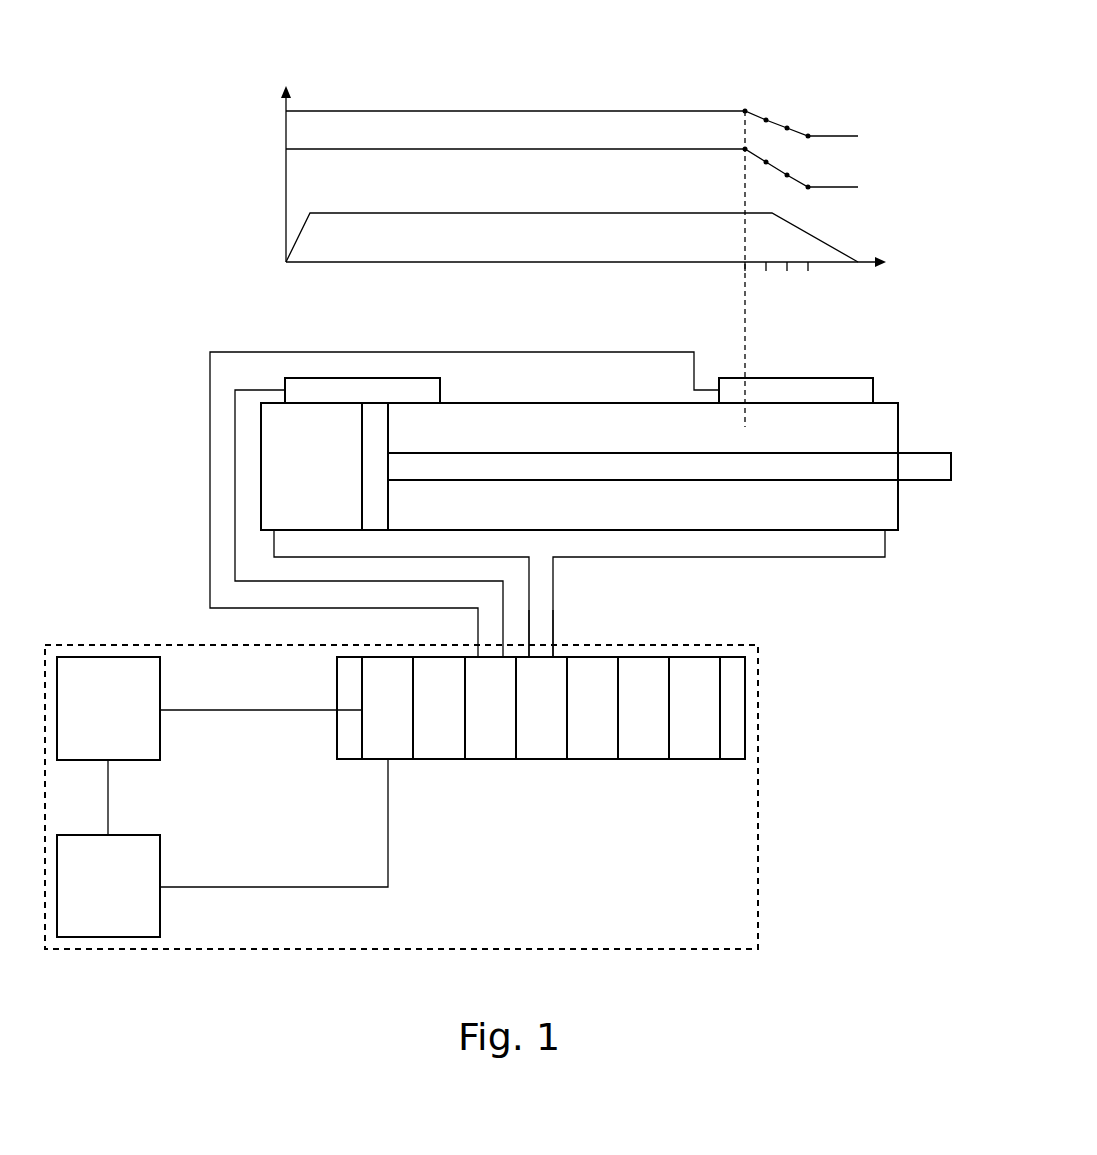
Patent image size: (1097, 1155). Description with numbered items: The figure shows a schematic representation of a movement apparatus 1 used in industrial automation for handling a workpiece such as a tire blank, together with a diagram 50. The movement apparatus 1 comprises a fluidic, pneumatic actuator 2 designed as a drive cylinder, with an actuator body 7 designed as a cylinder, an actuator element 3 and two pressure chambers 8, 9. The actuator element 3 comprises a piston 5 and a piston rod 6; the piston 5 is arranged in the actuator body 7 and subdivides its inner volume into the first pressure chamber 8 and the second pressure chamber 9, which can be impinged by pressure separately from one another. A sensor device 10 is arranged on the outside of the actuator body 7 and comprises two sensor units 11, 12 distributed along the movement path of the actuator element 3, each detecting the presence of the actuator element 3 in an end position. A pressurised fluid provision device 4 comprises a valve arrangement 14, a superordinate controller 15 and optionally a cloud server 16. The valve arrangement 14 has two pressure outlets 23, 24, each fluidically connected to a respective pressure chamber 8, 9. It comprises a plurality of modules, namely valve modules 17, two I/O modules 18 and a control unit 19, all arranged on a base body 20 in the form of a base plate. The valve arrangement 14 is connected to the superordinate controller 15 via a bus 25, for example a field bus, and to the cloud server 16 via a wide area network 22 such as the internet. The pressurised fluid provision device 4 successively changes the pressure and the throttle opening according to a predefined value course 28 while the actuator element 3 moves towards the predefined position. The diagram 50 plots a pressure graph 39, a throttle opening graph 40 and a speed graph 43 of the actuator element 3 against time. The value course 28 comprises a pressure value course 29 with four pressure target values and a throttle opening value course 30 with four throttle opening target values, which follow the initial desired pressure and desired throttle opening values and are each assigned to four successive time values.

The movement apparatus 1 is at (168, 292).
The fluidic actuator 2 is at (170, 464).
The actuator element 3 is at (662, 457).
The pressurised fluid provision device 4 is at (759, 778).
The piston 5 is at (380, 513).
The piston rod 6 is at (925, 462).
The actuator body 7 is at (886, 402).
The first pressure chamber 8 is at (319, 475).
The second pressure chamber 9 is at (650, 441).
The sensor device 10 is at (579, 358).
The sensor unit 11 is at (327, 386).
The sensor unit 12 is at (808, 389).
The valve arrangement 14 is at (746, 693).
The superordinate controller 15 is at (120, 719).
The cloud server 16 is at (120, 896).
The valve module 17 is at (553, 720).
The I/O module 18 is at (451, 720).
The control unit 19 is at (400, 720).
The base body 20 is at (347, 752).
The wide area network 22 is at (248, 823).
The pressure outlet 23 is at (530, 650).
The pressure outlet 24 is at (554, 650).
The bus 25 is at (261, 699).
The value course 28 is at (809, 119).
The pressure value course 29 is at (795, 92).
The throttle opening value course 30 is at (772, 183).
The pressure graph 39 is at (443, 109).
The throttle opening graph 40 is at (499, 148).
The speed graph 43 is at (434, 212).
The diagram 50 is at (252, 175).